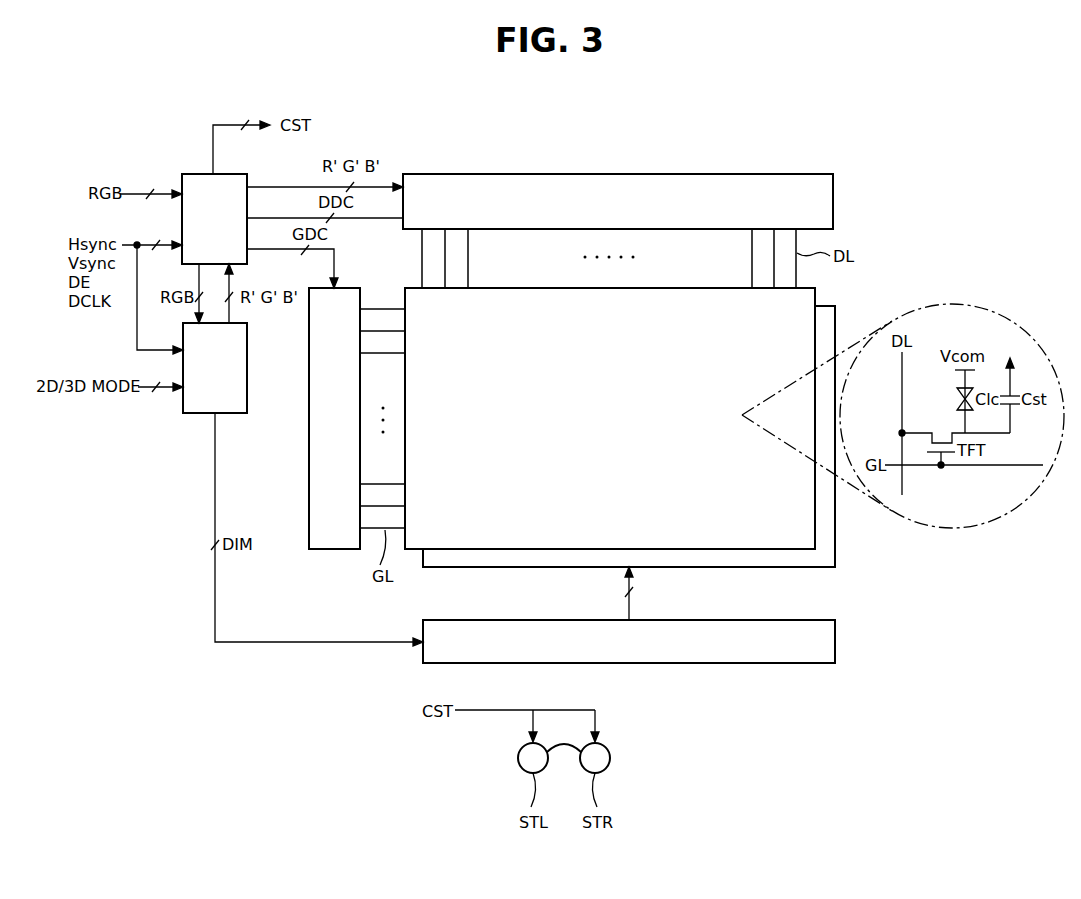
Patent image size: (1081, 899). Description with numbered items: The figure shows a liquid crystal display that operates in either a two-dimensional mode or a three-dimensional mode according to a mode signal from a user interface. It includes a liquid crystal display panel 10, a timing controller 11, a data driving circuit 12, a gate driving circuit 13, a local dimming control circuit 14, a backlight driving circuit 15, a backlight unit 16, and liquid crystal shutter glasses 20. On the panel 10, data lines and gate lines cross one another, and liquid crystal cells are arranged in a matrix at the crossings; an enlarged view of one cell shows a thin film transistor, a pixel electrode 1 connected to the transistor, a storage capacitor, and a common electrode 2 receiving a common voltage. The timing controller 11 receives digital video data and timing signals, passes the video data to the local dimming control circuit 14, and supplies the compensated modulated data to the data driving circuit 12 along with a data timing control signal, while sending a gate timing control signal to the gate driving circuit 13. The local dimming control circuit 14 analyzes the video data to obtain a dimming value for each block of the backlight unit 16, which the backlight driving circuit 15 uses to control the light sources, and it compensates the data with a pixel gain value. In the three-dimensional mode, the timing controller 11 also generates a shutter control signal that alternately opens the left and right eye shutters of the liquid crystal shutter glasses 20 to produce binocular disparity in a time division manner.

The liquid crystal display panel 10 is at (618, 431).
The timing controller 11 is at (225, 226).
The data driving circuit 12 is at (619, 209).
The gate driving circuit 13 is at (343, 431).
The local dimming control circuit 14 is at (225, 375).
The backlight driving circuit 15 is at (641, 649).
The backlight unit 16 is at (836, 539).
The liquid crystal shutter glasses 20 is at (622, 745).
The pixel electrode 1 is at (962, 405).
The common electrode 2 is at (962, 393).